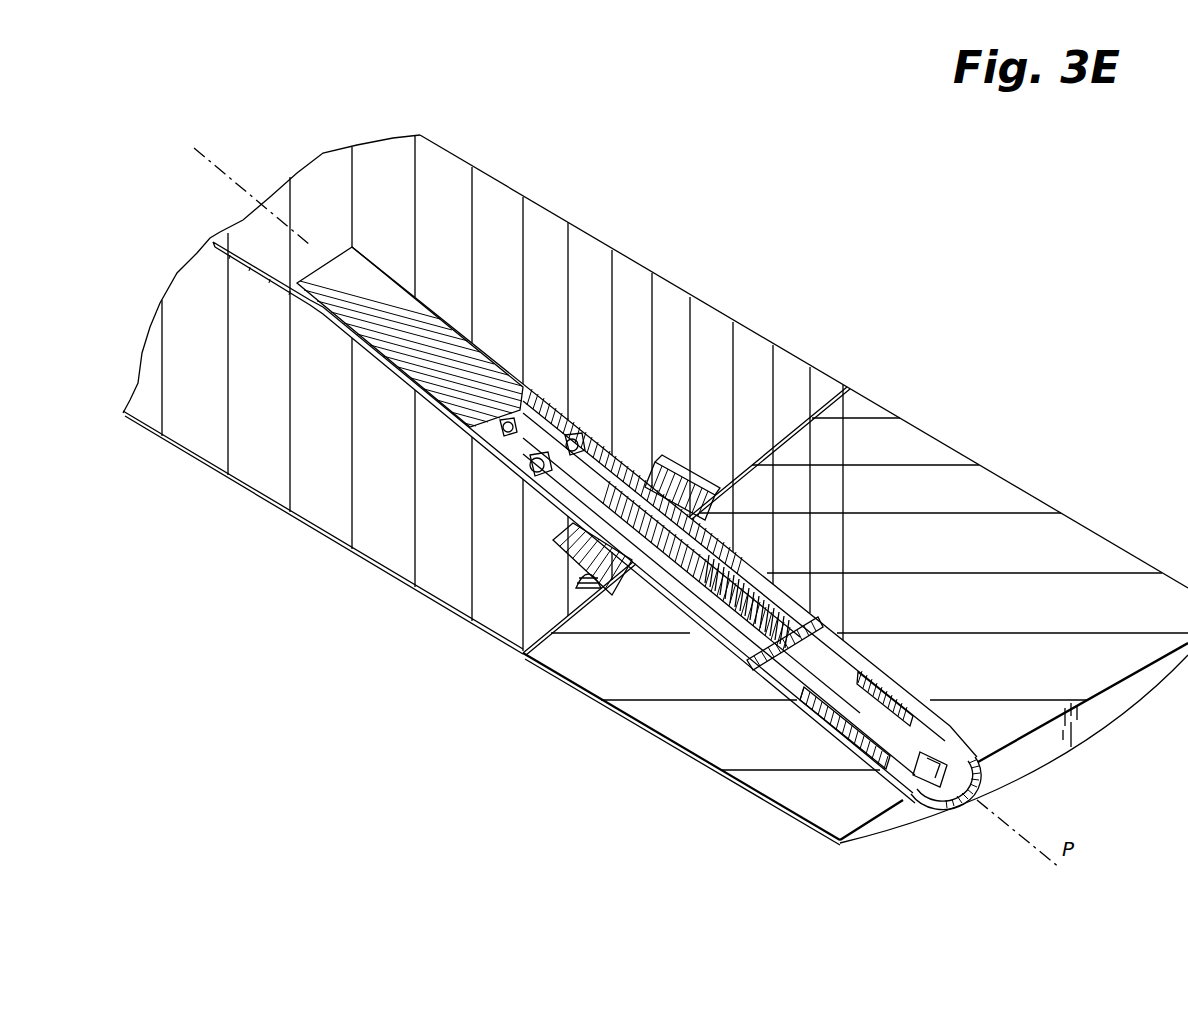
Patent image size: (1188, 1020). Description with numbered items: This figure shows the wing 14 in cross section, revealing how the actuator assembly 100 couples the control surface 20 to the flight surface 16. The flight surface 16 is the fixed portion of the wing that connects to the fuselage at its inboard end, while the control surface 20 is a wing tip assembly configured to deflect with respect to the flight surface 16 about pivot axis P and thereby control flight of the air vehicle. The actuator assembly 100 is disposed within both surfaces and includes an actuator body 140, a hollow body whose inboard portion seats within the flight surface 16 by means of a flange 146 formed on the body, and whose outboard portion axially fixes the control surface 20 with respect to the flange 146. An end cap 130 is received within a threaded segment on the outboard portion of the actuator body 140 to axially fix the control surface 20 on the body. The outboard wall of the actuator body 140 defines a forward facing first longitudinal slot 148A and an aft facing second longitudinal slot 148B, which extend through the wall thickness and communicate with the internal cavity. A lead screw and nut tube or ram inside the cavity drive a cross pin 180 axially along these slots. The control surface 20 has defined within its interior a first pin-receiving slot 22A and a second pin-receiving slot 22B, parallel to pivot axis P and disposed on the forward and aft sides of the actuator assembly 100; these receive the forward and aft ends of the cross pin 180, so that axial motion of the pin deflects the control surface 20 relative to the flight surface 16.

The wing 14 is at (917, 250).
The flight surface 16 is at (306, 547).
The control surface 20 is at (658, 751).
The actuator assembly 100 is at (822, 535).
The flange 146 is at (677, 467).
The actuator body 140 is at (720, 570).
The second pin-receiving slot 22B is at (772, 588).
The first pin-receiving slot 22A is at (725, 633).
The cross pin 180 is at (815, 620).
The second longitudinal slot 148B is at (843, 670).
The first longitudinal slot 148A is at (803, 703).
The end cap 130 is at (933, 790).